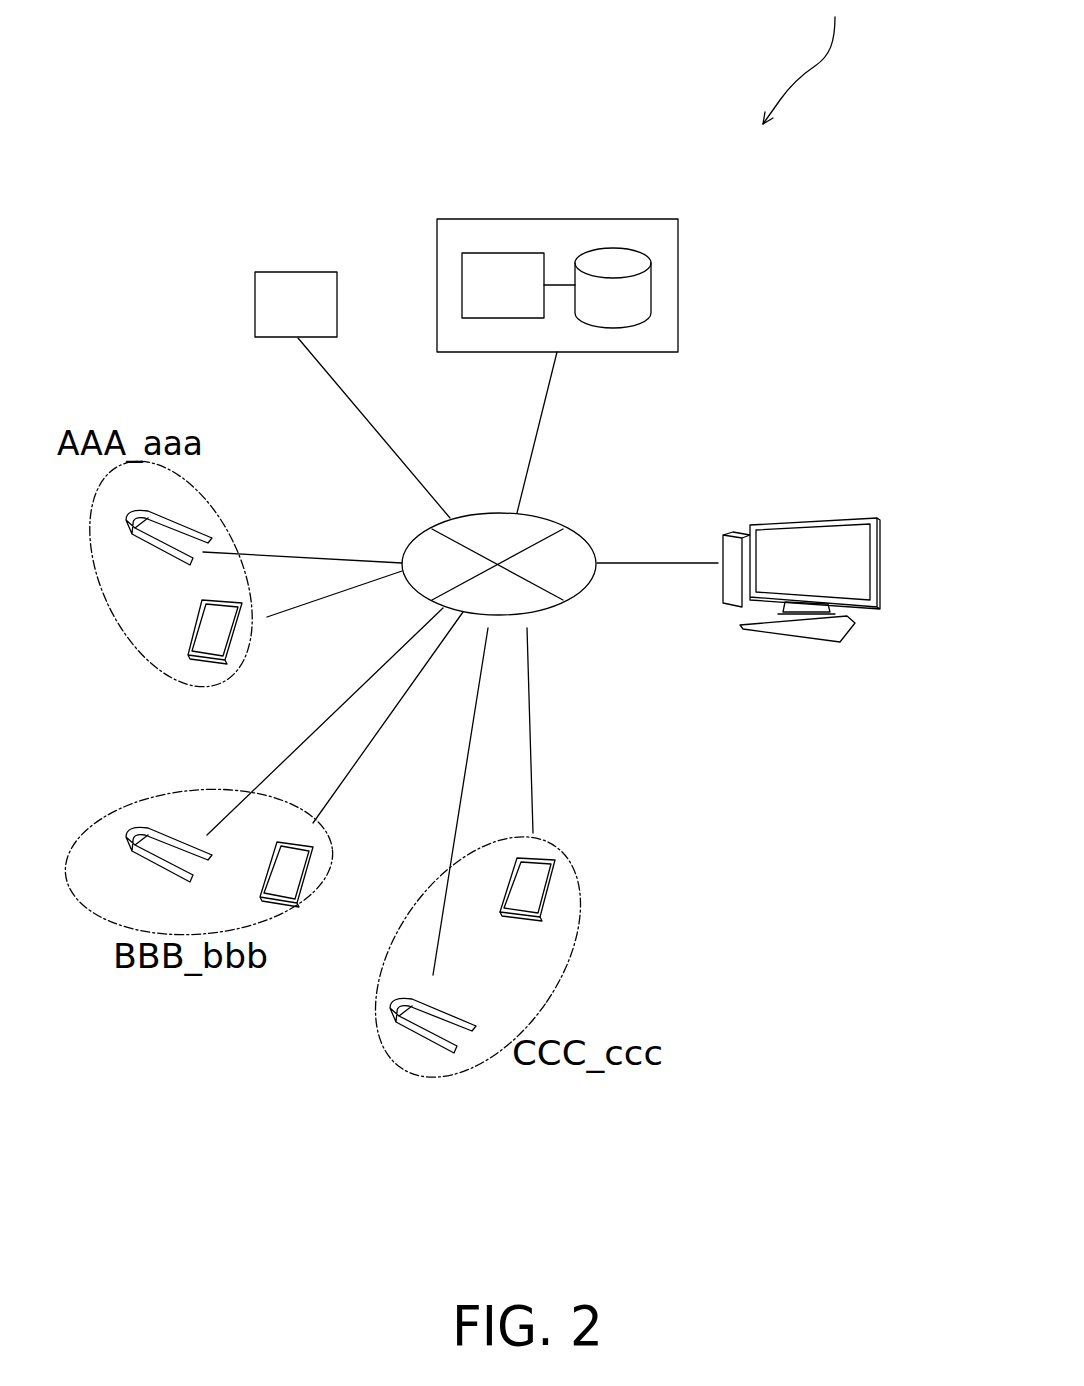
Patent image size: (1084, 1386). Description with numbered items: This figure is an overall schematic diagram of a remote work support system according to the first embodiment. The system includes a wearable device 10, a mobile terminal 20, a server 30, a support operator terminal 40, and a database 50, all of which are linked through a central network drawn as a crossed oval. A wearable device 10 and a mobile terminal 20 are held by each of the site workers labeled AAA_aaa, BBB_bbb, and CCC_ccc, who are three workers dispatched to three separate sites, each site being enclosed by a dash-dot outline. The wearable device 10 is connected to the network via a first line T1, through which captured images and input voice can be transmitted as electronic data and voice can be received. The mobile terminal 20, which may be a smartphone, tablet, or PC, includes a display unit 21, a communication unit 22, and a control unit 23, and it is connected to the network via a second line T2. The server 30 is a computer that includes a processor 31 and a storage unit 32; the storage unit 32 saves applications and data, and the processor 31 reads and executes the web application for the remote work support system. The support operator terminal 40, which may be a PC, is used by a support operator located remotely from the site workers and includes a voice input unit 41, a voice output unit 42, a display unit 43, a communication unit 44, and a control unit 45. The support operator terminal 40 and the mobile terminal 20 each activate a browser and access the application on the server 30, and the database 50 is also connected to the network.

The wearable device 10 is at (153, 527).
The mobile terminal 20 is at (489, 785).
The display unit 21 is at (525, 888).
The communication unit 22 is at (645, 941).
The control unit 23 is at (547, 912).
The server 30 is at (455, 219).
The processor 31 is at (504, 253).
The storage unit 32 is at (613, 263).
The support operator terminal 40 is at (818, 503).
The voice input unit 41 is at (863, 607).
The voice output unit 42 is at (875, 558).
The display unit 43 is at (835, 553).
The communication unit 44 is at (724, 601).
The control unit 45 is at (732, 592).
The database 50 is at (292, 270).
The first line T1 is at (451, 801).
The second line T2 is at (555, 730).